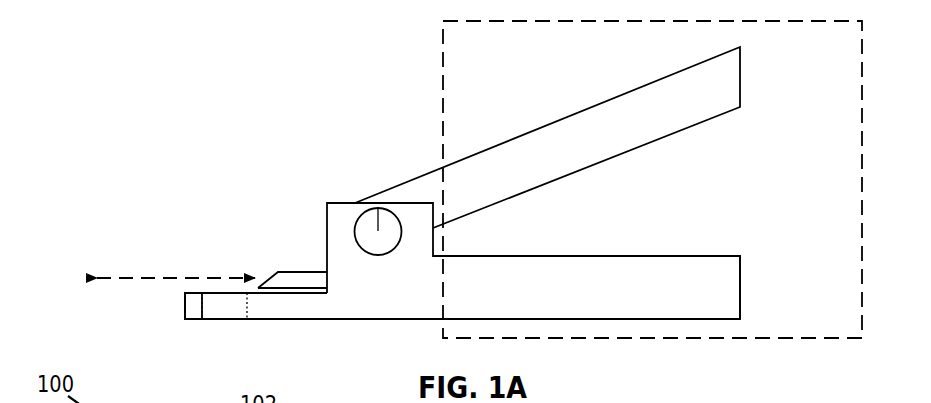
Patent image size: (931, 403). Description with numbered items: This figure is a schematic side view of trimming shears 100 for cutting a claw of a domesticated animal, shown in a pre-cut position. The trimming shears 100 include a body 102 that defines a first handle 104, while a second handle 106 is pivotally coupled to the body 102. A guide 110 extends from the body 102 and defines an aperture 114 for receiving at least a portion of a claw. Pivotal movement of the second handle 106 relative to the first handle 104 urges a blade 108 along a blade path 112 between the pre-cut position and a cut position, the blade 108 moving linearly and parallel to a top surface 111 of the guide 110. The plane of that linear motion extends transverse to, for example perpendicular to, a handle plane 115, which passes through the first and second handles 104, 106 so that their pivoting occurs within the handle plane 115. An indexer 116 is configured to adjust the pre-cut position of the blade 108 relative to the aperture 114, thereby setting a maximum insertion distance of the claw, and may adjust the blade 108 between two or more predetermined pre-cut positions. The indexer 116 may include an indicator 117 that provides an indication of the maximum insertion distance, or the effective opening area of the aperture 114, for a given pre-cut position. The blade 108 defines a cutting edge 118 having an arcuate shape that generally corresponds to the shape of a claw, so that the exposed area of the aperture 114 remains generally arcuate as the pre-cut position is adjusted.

The trimming shears 100 is at (134, 84).
The body 102 is at (293, 207).
The first handle 104 is at (741, 297).
The second handle 106 is at (741, 88).
The blade 108 is at (282, 271).
The guide 110 is at (305, 320).
The top surface 111 is at (190, 297).
The blade path 112 is at (168, 277).
The aperture 114 is at (200, 312).
The handle plane 115 is at (443, 52).
The indexer 116 is at (357, 218).
The indicator 117 is at (378, 232).
The cutting edge 118 is at (253, 281).